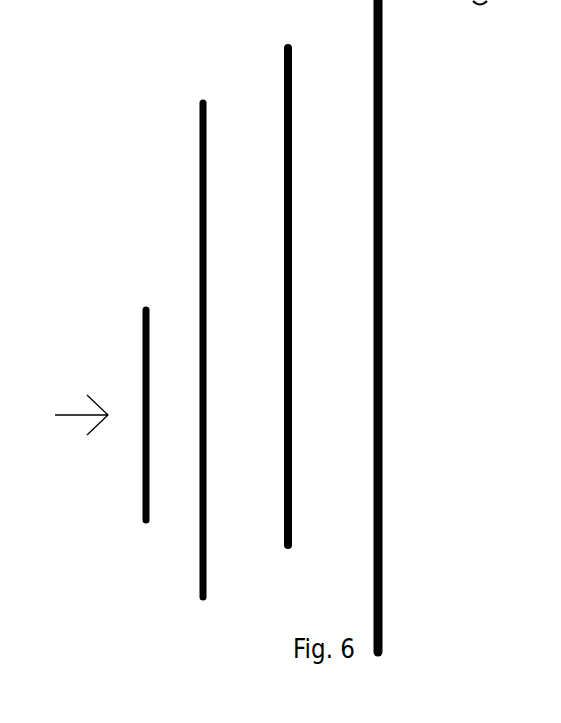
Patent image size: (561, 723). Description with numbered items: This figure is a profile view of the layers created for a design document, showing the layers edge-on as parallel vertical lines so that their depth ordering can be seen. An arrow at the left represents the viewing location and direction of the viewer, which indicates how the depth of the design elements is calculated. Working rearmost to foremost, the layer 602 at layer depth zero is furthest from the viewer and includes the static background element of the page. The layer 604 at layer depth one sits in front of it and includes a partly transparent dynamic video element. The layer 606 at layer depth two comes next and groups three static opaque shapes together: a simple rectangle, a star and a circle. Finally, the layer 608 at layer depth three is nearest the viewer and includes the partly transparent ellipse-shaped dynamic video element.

The layer 602 is at (383, 75).
The layer 604 is at (288, 548).
The layer 606 is at (203, 100).
The layer 608 is at (140, 309).